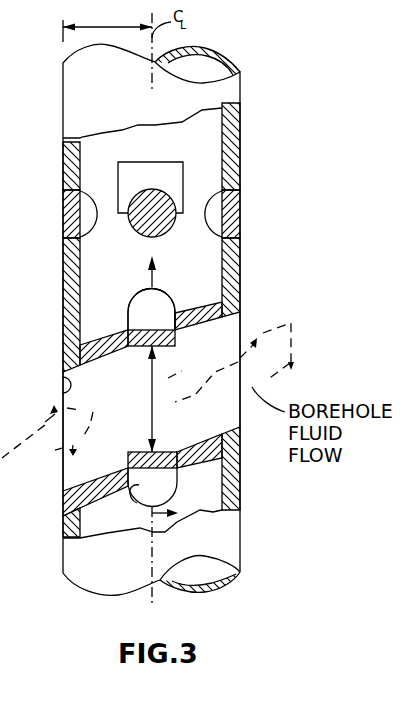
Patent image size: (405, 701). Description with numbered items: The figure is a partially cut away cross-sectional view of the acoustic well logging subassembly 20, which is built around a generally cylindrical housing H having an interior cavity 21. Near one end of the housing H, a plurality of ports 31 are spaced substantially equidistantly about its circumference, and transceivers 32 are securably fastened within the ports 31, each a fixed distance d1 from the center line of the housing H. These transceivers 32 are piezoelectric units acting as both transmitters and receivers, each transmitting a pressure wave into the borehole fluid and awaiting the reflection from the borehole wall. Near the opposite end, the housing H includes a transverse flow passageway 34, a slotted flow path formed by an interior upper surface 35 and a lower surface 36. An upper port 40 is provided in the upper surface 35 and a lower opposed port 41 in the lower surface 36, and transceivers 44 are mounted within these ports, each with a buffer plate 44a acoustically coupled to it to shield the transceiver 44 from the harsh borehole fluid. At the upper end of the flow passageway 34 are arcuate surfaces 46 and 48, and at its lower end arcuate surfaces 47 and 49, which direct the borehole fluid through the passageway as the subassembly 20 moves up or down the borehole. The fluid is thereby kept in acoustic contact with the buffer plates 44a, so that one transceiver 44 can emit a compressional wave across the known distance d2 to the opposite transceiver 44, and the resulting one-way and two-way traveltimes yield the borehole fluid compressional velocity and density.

The subassembly 20 is at (25, 106).
The housing H is at (240, 72).
The interior cavity 21 is at (211, 139).
The ports 31 is at (160, 200).
The transceivers 32 is at (138, 238).
The transverse flow passageway 34 is at (131, 399).
The upper surface 35 is at (97, 362).
The lower surface 36 is at (67, 490).
The upper port 40 is at (156, 314).
The lower port 41 is at (137, 504).
The transceivers 44 is at (128, 303).
The buffer plate 44a is at (173, 347).
The arcuate surface 46 is at (240, 311).
The arcuate surface 47 is at (230, 427).
The arcuate surface 48 is at (63, 393).
The arcuate surface 49 is at (63, 497).
The fixed distance d1 is at (107, 25).
The known distance d2 is at (161, 399).